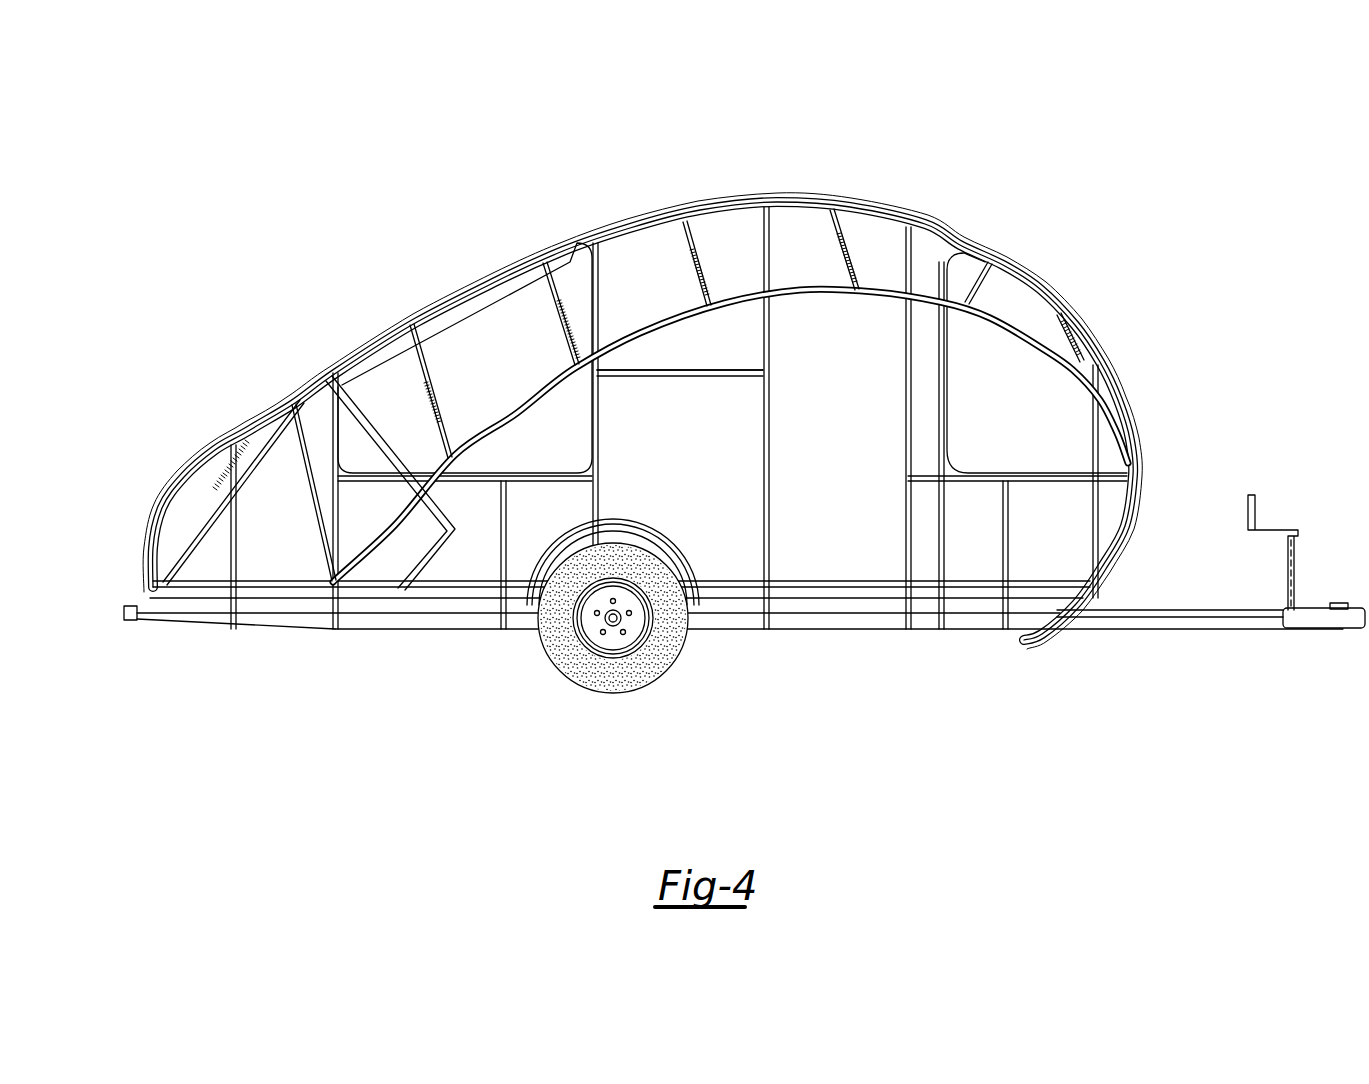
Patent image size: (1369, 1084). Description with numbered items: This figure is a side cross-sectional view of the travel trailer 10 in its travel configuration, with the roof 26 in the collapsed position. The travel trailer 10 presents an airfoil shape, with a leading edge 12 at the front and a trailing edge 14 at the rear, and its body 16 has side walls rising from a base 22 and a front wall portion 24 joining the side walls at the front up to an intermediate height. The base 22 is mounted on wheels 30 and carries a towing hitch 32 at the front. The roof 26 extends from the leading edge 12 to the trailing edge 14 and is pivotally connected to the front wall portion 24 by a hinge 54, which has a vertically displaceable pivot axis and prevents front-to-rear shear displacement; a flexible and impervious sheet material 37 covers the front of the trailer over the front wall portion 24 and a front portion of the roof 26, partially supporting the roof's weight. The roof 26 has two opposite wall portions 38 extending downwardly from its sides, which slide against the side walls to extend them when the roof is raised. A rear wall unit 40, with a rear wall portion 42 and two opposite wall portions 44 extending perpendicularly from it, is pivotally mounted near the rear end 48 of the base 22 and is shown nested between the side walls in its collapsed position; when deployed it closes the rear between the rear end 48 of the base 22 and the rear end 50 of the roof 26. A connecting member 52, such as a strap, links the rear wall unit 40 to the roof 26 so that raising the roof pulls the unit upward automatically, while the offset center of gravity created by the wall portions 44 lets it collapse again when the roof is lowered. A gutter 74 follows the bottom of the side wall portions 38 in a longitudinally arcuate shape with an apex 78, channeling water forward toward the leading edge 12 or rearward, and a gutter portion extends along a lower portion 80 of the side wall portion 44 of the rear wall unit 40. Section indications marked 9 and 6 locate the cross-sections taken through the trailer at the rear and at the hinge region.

The travel trailer 10 is at (701, 458).
The leading edge 12 is at (1140, 470).
The trailing edge 14 is at (143, 572).
The body 16 is at (1026, 639).
The base 22 is at (247, 622).
The front wall portion 24 is at (1123, 492).
The roof 26 is at (783, 200).
The wheels 30 is at (656, 656).
The towing hitch 32 is at (1320, 610).
The flexible and impervious sheet material 37 is at (1134, 447).
The wall portions 38 is at (732, 228).
The rear wall unit 40 is at (246, 477).
The rear wall portion 42 is at (267, 450).
The opposite wall portions 44 is at (373, 433).
The rear end of the base 48 is at (143, 601).
The rear end of the roof 50 is at (150, 583).
The connecting member 52 is at (352, 590).
The hinge 54 is at (1128, 466).
The gutter 74 is at (813, 298).
The apex 78 is at (813, 282).
The lower portion of the side wall portion 80 is at (208, 590).
The section line 9 is at (1056, 270).
The section line 6- 6 is at (1052, 367).